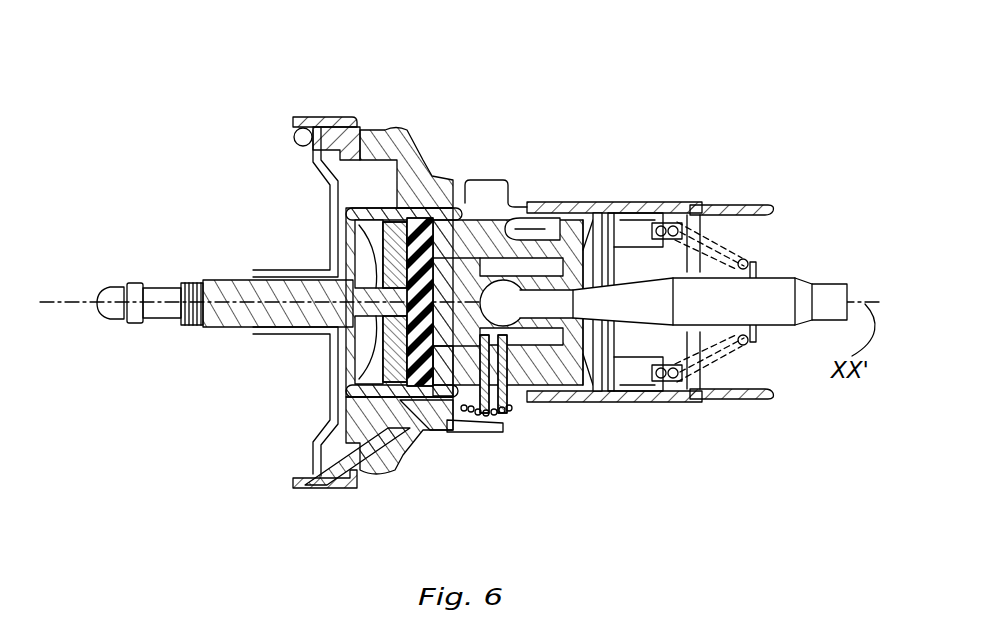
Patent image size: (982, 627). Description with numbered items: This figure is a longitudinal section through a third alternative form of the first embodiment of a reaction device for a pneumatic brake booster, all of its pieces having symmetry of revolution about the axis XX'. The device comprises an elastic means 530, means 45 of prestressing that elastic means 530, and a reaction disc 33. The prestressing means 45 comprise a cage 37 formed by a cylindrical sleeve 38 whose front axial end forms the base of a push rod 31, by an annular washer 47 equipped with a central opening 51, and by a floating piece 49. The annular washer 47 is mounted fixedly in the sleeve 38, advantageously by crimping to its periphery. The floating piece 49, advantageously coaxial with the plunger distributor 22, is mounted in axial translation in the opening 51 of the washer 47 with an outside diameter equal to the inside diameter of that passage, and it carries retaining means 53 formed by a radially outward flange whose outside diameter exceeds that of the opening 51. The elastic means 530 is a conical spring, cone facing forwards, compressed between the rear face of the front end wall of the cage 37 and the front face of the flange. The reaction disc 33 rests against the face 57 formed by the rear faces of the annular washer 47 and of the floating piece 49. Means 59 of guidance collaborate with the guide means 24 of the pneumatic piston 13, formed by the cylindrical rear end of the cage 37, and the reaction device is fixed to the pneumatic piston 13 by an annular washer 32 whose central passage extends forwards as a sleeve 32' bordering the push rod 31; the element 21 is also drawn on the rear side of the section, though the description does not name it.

The pneumatic piston 13 is at (343, 133).
The cylindrical sleeve 38 is at (337, 208).
The elastic means 530 is at (397, 207).
The annular washer 47 is at (422, 214).
The means of guidance 59 is at (465, 207).
The guide means 24 is at (525, 203).
The reaction disc 33 is at (560, 207).
The output shaft 21 is at (810, 277).
The annular washer 32 is at (272, 202).
The retaining means 53 is at (342, 251).
The push rod 31 is at (157, 310).
The sleeve 32' is at (282, 401).
The central opening 51 is at (395, 340).
The face 57 is at (447, 400).
The cage 37 is at (367, 410).
The means of prestressing 45 is at (415, 420).
The floating piece 49 is at (415, 410).
The plunger distributor 22 is at (513, 395).